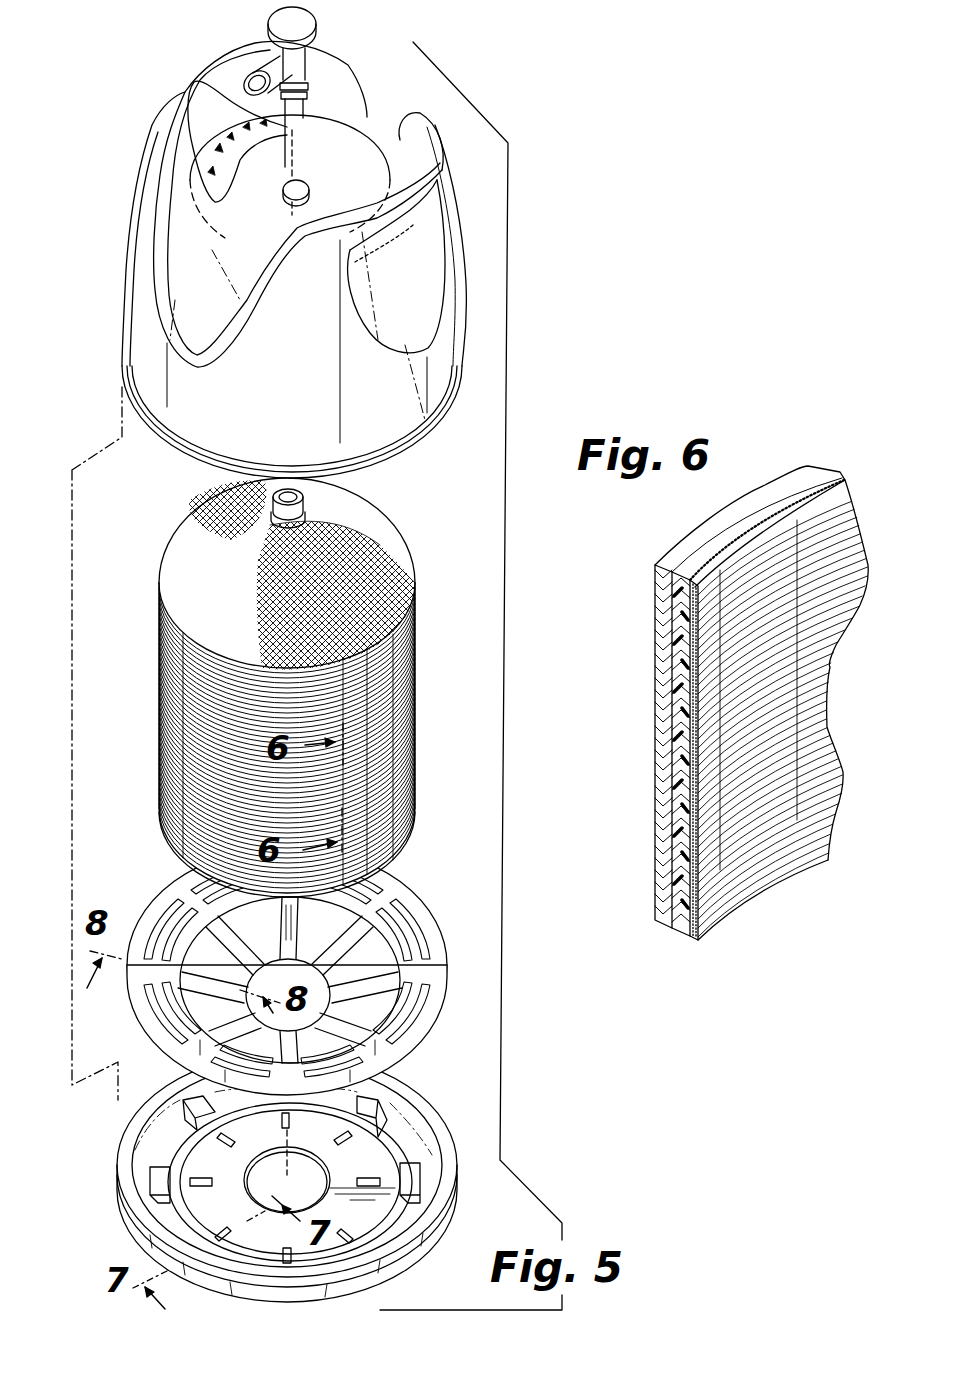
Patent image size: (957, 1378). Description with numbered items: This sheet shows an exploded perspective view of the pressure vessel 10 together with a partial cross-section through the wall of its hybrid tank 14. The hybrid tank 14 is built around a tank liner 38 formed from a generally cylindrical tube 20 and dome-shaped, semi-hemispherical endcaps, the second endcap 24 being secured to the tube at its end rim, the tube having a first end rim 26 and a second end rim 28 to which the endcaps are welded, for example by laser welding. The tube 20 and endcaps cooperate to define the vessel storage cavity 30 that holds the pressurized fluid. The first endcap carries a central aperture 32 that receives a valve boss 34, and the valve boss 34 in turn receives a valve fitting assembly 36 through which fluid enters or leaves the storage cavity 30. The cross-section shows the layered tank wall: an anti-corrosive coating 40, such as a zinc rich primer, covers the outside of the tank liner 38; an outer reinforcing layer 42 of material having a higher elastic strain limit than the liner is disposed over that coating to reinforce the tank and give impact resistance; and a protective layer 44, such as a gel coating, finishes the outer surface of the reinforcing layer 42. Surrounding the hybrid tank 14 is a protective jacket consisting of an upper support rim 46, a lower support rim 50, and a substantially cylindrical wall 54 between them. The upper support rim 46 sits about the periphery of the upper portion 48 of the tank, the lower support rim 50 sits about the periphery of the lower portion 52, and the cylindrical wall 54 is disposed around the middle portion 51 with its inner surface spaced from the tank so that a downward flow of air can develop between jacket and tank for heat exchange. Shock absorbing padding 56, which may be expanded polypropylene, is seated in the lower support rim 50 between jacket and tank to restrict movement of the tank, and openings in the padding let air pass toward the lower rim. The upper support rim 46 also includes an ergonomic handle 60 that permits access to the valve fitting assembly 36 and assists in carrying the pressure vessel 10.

In FIG. 5, the pressure vessel 10 is at (122, 160).
In FIG. 5, the hybrid tank 14 is at (107, 753).
In FIG. 5, the generally cylindrical tube 20 is at (284, 687).
In FIG. 5, the second endcap 24 is at (420, 828).
In FIG. 5, the first end rim 26 is at (410, 542).
In FIG. 5, the second end rim 28 is at (414, 778).
In FIG. 6, the vessel storage cavity 30 is at (730, 749).
In FIG. 5, the central aperture 32 is at (260, 488).
In FIG. 5, the valve boss 34 is at (294, 488).
In FIG. 5, the valve fitting assembly 36 is at (313, 105).
In FIG. 6, the tank liner 38 is at (653, 900).
In FIG. 6, the anti-corrosive coating 40 is at (670, 932).
In FIG. 6, the outer reinforcing layer 42 is at (692, 945).
In FIG. 6, the protective layer 44 is at (740, 905).
In FIG. 5, the upper support rim 46 is at (367, 153).
In FIG. 5, the upper portion 48 is at (150, 495).
In FIG. 5, the lower support rim 50 is at (120, 1195).
In FIG. 5, the middle portion 51 is at (150, 585).
In FIG. 5, the lower portion 52 is at (148, 805).
In FIG. 5, the substantially cylindrical wall 54 is at (123, 256).
In FIG. 5, the shock absorbing padding 56 is at (267, 971).
In FIG. 5, the handle 60 is at (194, 87).